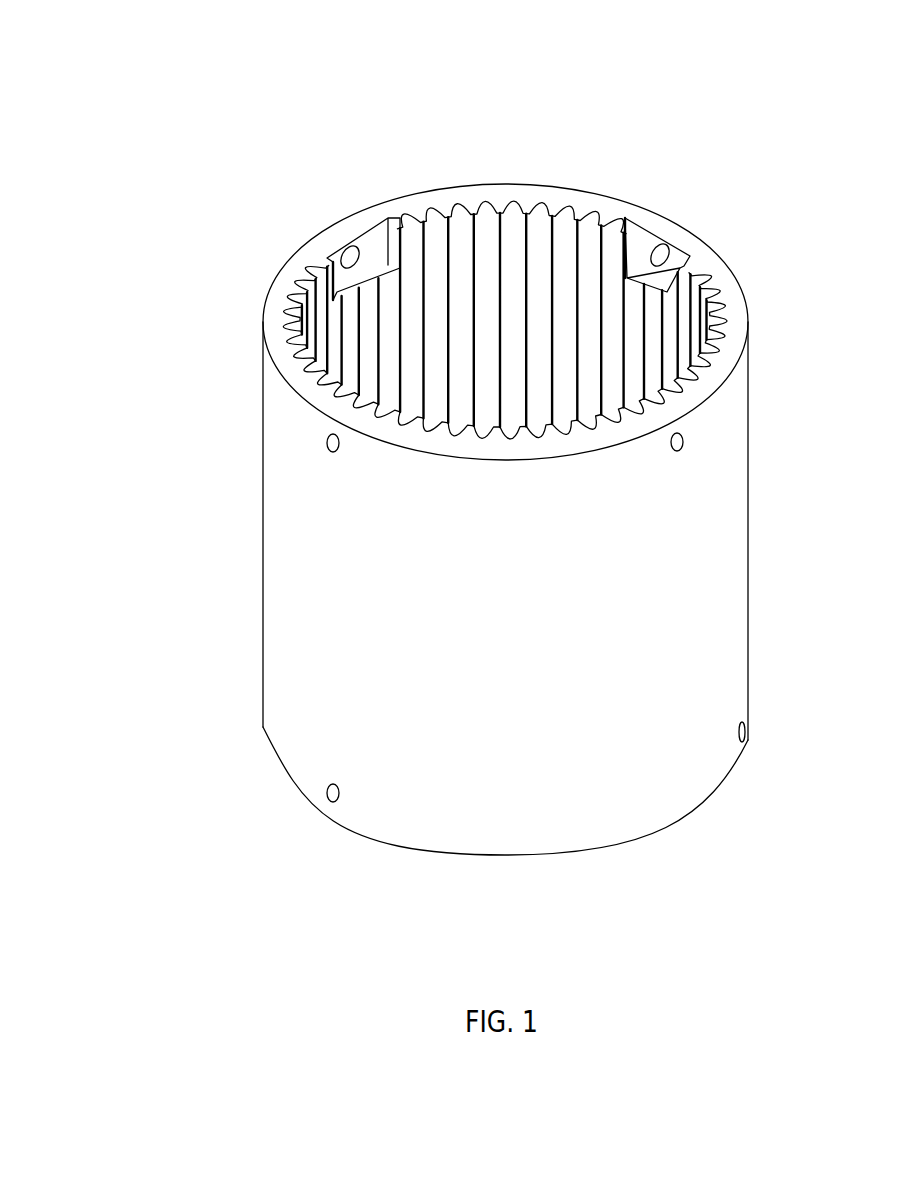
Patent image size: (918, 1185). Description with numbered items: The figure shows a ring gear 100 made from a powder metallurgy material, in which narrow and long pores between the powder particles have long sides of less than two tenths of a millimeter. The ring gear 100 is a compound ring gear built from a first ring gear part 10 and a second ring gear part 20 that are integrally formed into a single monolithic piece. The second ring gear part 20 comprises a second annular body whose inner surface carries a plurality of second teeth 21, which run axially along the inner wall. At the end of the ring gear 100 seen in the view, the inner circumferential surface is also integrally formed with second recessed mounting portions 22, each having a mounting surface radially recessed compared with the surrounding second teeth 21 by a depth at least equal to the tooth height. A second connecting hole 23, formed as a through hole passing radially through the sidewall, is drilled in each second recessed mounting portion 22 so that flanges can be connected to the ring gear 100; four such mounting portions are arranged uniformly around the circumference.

The ring gear 100 is at (522, 62).
The first ring gear part 10 is at (303, 723).
The second ring gear part 20 is at (282, 408).
The second teeth 21 is at (498, 327).
The second recessed mounting portion 22 is at (375, 258).
The second connecting hole 23 is at (350, 258).